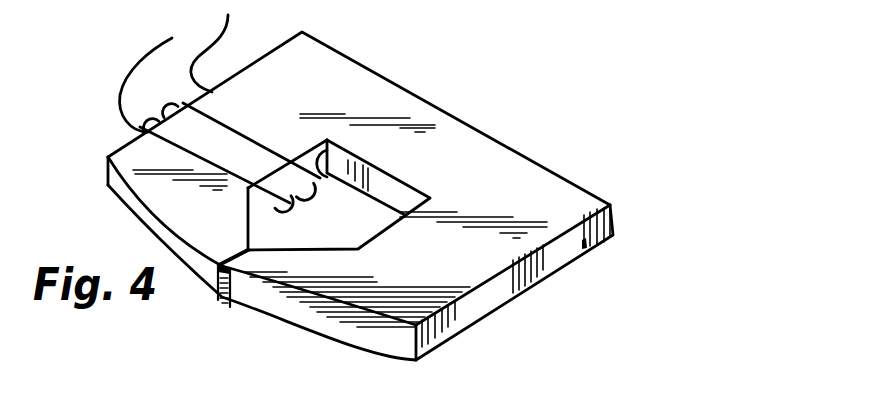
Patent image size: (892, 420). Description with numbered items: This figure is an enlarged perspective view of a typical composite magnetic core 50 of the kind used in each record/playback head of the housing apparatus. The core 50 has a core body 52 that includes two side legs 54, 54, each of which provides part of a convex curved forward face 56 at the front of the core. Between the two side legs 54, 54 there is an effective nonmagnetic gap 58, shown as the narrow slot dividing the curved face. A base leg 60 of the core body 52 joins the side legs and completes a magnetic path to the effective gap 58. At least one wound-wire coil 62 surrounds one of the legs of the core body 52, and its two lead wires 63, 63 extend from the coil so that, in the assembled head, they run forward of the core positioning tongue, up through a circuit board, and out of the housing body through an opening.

The composite magnetic core 50 is at (500, 298).
The core body 52 is at (493, 156).
The side legs 54 is at (180, 203).
The convex curved forward face 56 is at (112, 192).
The effective nonmagnetic gap 58 is at (212, 270).
The base leg 60 is at (387, 98).
The wound-wire coil 62 is at (263, 116).
The lead wires 63 is at (228, 15).